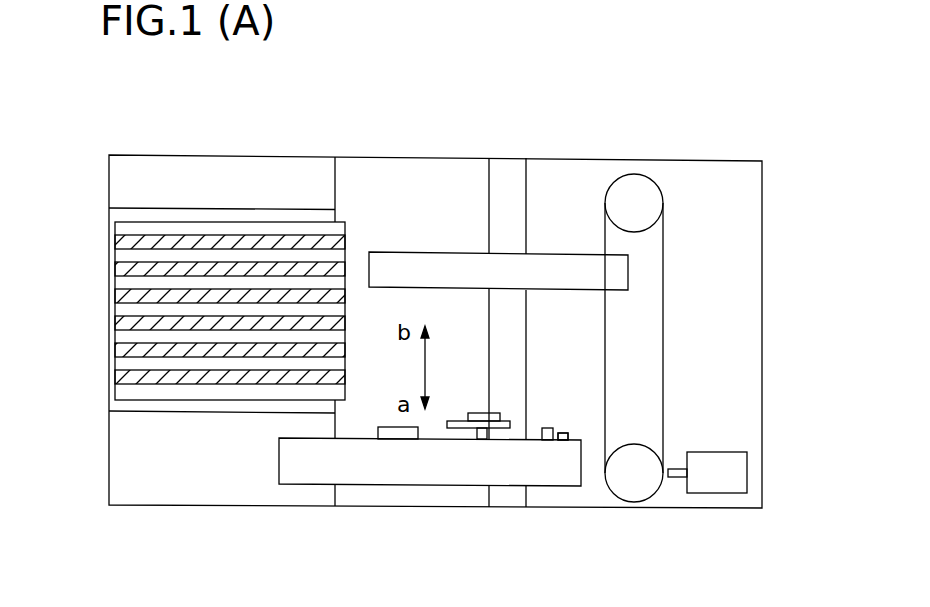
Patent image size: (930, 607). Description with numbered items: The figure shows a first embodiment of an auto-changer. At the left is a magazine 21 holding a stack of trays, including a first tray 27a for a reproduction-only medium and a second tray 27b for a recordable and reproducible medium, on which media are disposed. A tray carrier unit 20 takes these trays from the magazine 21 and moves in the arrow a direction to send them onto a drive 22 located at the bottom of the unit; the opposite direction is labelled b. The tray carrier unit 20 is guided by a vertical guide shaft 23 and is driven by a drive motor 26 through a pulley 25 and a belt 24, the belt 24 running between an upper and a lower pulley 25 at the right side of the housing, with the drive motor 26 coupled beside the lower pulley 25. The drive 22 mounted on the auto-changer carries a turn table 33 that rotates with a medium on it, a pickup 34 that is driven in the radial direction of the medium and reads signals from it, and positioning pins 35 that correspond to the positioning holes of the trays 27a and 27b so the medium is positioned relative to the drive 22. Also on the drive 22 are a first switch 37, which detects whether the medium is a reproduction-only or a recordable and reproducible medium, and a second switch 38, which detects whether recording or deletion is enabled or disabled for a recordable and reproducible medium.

The tray carrier unit 20 is at (412, 265).
The magazine 21 is at (130, 214).
The drive 22 is at (300, 470).
The guide shaft 23 is at (509, 173).
The belt 24 is at (653, 263).
The pulley 25 is at (633, 192).
The drive motor 26 is at (738, 493).
The first tray 27a is at (115, 271).
The second tray 27b is at (115, 355).
The turn table 33 is at (463, 432).
The pickup 34 is at (392, 433).
The positioning pins 35 is at (552, 443).
The first switch 37 is at (568, 435).
The second switch 38 is at (563, 436).